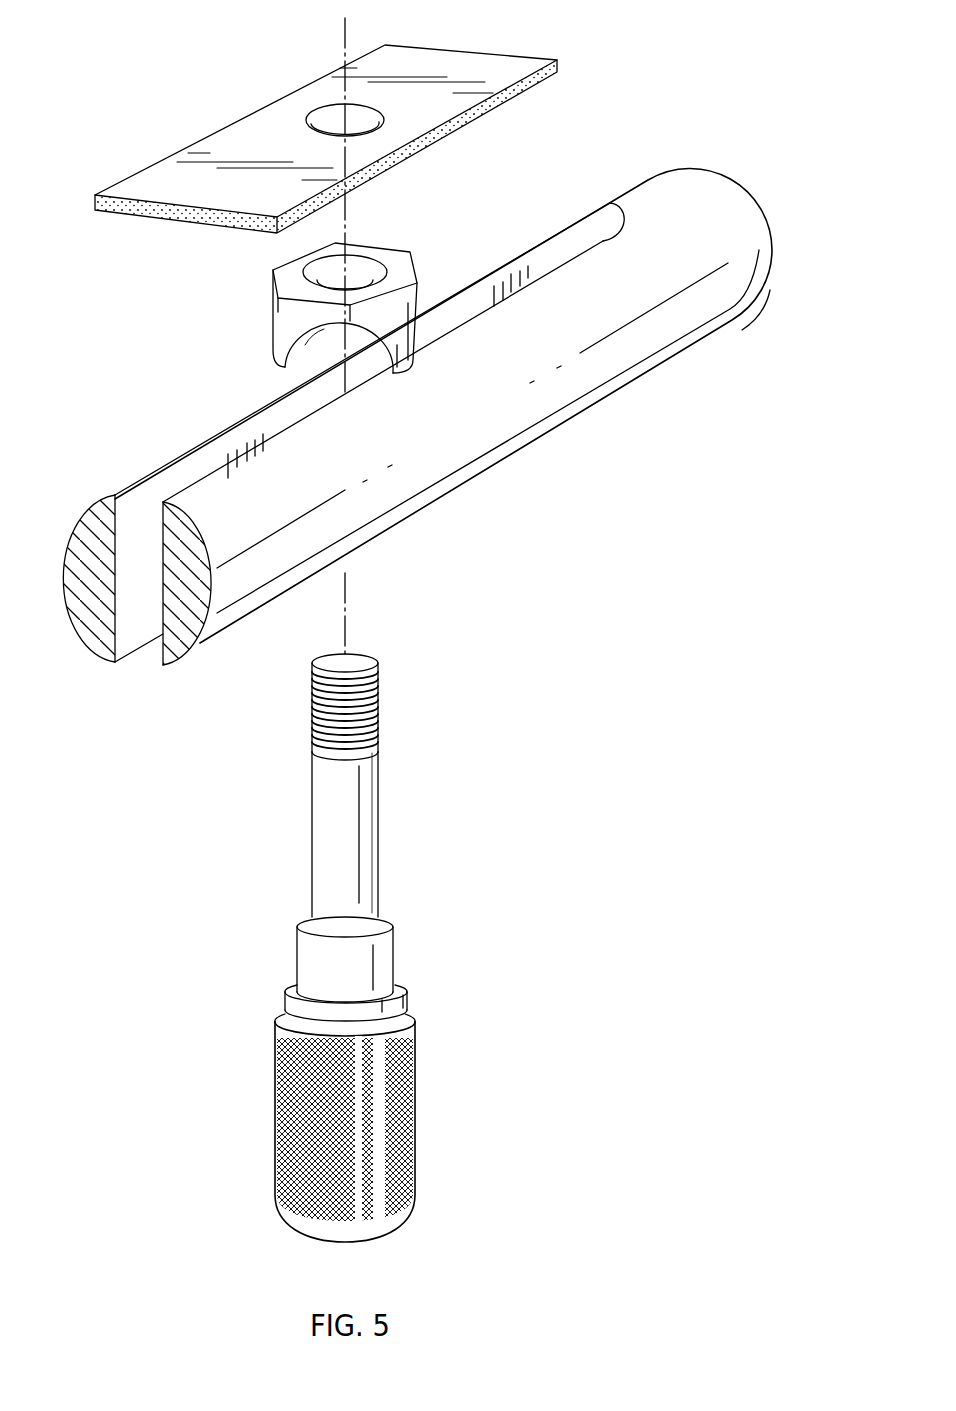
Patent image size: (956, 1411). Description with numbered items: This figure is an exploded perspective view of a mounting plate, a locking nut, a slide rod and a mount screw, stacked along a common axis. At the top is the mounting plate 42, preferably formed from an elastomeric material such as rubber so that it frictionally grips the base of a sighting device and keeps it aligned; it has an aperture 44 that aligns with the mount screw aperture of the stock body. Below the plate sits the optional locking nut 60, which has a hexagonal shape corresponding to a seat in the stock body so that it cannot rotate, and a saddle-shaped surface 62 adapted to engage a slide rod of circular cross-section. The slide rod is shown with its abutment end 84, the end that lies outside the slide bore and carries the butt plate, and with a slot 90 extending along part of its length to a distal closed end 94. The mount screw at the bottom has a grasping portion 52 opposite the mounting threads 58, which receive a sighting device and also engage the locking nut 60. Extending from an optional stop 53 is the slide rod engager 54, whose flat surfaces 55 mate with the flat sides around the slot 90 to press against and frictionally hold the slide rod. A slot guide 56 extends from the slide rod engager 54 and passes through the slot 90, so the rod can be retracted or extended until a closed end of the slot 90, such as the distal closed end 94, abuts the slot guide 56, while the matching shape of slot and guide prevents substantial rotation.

The mounting plate 42 is at (510, 58).
The aperture 44 is at (372, 110).
The locking nut 60 is at (373, 245).
The saddle-shaped surface 62 is at (287, 358).
The abutment end 84 is at (743, 182).
The distal closed end 94 is at (622, 222).
The slot 90 is at (185, 468).
The mounting threads 58 is at (380, 697).
The slot guide 56 is at (353, 813).
The flat surfaces 55 is at (308, 915).
The slide rod engager 54 is at (365, 968).
The stop 53 is at (285, 1000).
The grasping portion 52 is at (400, 1128).